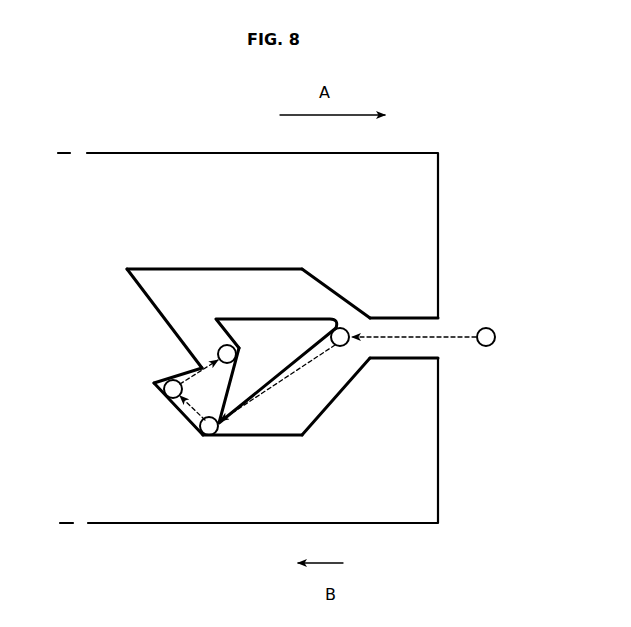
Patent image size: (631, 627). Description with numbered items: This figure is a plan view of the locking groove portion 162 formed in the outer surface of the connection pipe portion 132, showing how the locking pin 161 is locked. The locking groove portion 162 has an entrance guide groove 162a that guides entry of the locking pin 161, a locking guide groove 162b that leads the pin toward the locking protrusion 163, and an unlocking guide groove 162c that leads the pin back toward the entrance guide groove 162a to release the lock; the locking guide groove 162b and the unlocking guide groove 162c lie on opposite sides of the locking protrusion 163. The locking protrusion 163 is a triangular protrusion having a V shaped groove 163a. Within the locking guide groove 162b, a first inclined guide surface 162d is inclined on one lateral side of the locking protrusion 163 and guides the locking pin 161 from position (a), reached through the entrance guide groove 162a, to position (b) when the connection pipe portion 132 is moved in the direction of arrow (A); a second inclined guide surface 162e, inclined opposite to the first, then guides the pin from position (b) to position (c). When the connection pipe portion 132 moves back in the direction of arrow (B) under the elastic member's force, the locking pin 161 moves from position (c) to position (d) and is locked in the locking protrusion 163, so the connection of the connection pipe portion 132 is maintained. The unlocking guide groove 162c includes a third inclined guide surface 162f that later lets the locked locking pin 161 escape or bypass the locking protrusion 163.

The connection pipe portion 132 is at (120, 165).
The locking pin 161 is at (166, 383).
The locking groove portion 162 is at (340, 283).
The entrance guide groove 162a is at (395, 322).
The locking guide groove 162b is at (252, 417).
The unlocking guide groove 162c is at (176, 290).
The first inclined guide surface 162d is at (278, 376).
The second inclined guide surface 162e is at (183, 415).
The third inclined guide surface 162f is at (153, 300).
The locking protrusion 163 is at (296, 340).
The V shaped groove 163a is at (214, 318).